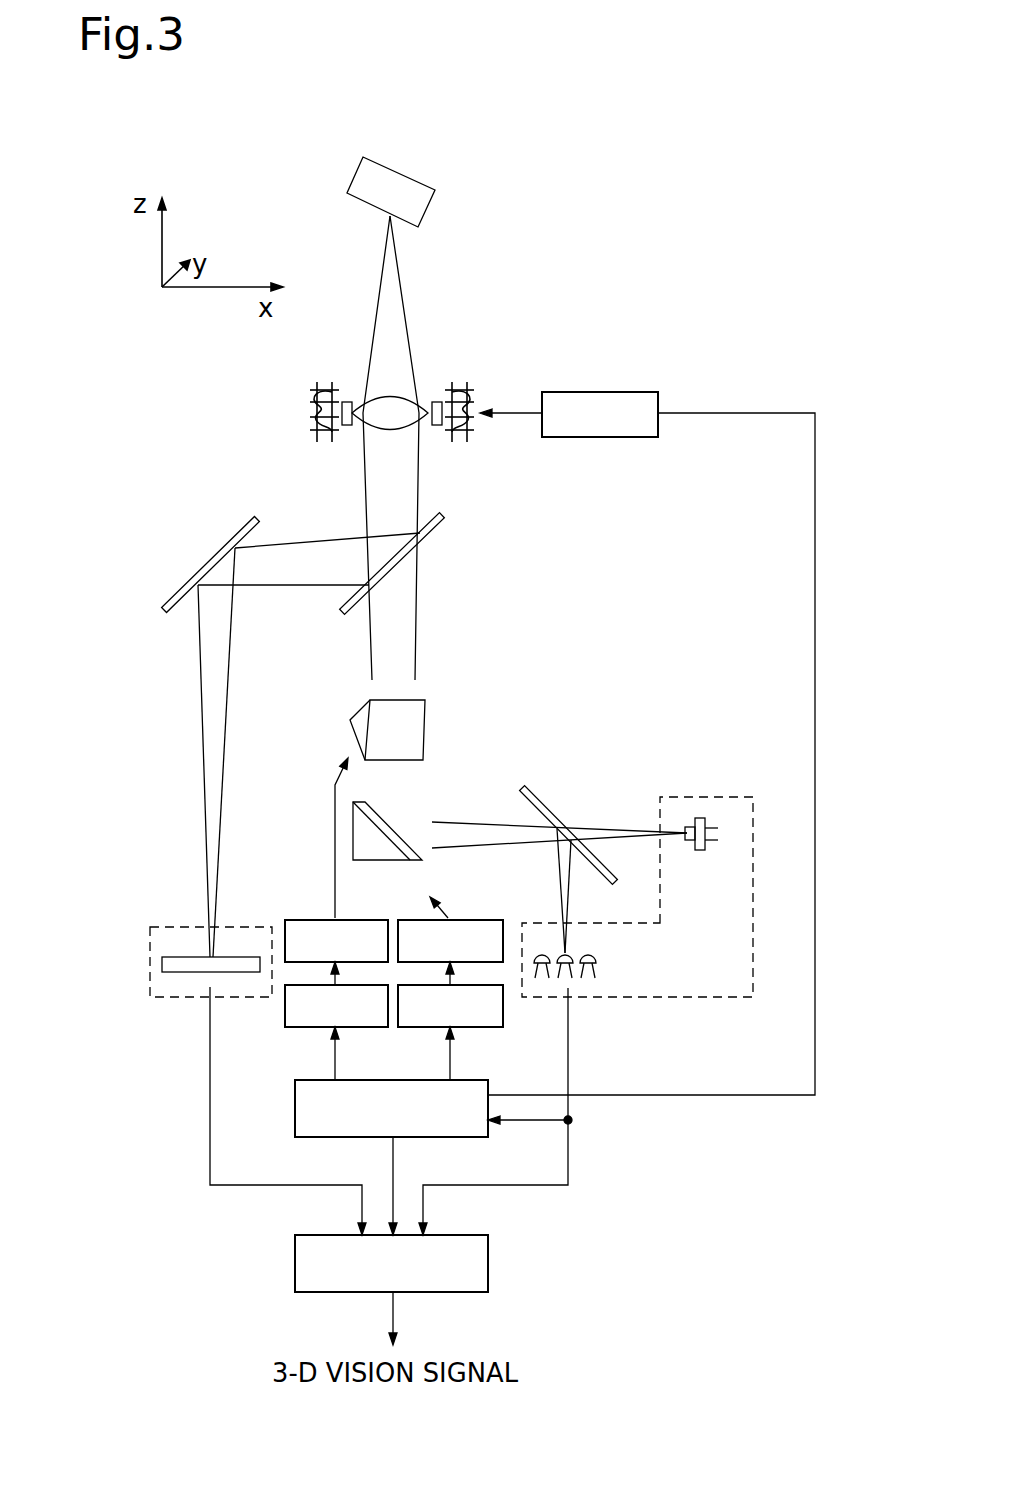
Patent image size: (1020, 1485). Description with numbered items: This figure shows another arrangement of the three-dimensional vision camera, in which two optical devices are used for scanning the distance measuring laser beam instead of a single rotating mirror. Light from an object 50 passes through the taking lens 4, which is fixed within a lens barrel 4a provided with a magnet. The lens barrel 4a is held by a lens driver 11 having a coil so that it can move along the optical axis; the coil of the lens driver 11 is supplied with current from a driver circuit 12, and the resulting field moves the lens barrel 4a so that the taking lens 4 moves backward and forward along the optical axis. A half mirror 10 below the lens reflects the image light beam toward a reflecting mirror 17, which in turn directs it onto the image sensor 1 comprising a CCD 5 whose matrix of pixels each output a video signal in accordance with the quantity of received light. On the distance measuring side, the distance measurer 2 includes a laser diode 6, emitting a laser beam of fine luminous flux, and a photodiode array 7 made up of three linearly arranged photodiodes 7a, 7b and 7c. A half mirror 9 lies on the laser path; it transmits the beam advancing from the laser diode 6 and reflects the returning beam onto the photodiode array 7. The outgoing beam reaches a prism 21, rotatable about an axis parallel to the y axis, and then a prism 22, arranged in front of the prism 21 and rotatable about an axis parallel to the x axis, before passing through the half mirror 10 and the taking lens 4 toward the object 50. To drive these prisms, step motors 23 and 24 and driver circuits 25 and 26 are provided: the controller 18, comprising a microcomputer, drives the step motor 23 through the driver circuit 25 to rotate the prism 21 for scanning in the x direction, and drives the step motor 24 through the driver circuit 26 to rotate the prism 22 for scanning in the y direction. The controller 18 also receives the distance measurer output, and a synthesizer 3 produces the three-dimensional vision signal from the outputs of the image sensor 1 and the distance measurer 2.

The object 50 is at (420, 182).
The taking lens 4 is at (397, 397).
The lens barrel 4a is at (436, 400).
The lens driver 11 is at (456, 440).
The driver circuit 12 is at (628, 392).
The reflecting mirror 17 is at (226, 547).
The half mirror 10 is at (430, 532).
The prism 22 is at (427, 708).
The prism 21 is at (380, 812).
The half mirror 9 is at (537, 793).
The laser diode 6 is at (702, 818).
The distance measurer 2 is at (740, 912).
The photodiode array 7 is at (570, 954).
The photodiode 7a is at (541, 970).
The photodiode 7b is at (561, 953).
The photodiode 7c is at (586, 953).
The step motor 23 is at (465, 918).
The step motor 24 is at (307, 920).
The driver circuit 25 is at (472, 1027).
The driver circuit 26 is at (298, 1027).
The controller 18 is at (295, 1112).
The synthesizer 3 is at (488, 1262).
The image sensor 1 is at (150, 947).
The CCD 5 is at (182, 967).